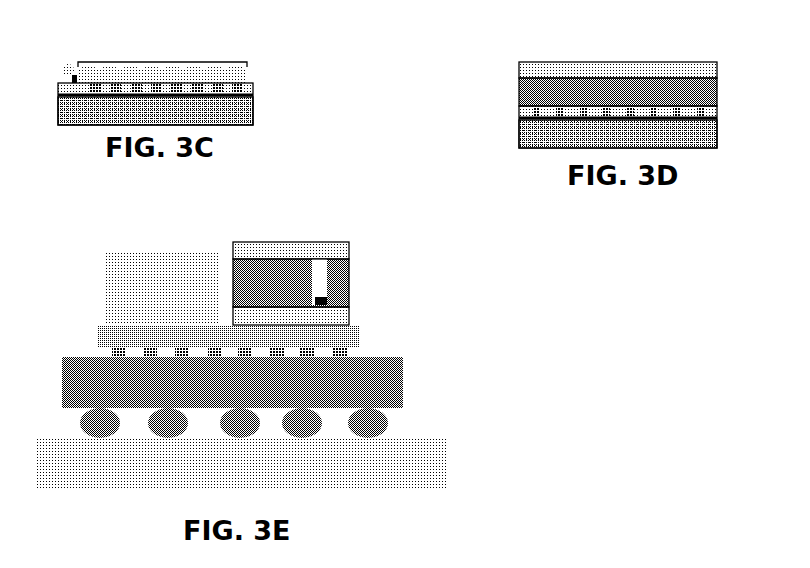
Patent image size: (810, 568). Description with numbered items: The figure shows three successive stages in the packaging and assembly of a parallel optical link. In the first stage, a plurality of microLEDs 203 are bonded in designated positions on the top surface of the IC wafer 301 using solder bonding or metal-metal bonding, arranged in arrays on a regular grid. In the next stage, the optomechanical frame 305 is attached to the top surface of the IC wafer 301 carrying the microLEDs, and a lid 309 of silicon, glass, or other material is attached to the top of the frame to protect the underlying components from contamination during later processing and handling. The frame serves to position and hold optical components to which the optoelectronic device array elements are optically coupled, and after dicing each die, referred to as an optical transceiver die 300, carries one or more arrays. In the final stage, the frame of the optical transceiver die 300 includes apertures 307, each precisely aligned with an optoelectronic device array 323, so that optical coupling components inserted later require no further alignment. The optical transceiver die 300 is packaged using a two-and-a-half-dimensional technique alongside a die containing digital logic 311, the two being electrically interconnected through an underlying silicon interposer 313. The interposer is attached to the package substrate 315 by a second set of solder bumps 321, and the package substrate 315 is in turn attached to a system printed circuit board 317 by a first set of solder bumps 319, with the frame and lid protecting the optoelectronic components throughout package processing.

In FIG. 3C, the microLEDs 203 is at (163, 55).
In FIG. 3D, the optical transceiver die 300 is at (452, 90).
In FIG. 3E, the optical transceiver die 300 is at (397, 298).
In FIG. 3C, the IC wafer 301 is at (253, 90).
In FIG. 3D, the IC wafer 301 is at (519, 113).
In FIG. 3E, the IC wafer 301 is at (291, 316).
In FIG. 3D, the optomechanical frame 305 is at (717, 92).
In FIG. 3E, the optomechanical frame 305 is at (291, 283).
In FIG. 3E, the apertures 307 is at (320, 280).
In FIG. 3D, the lid 309 is at (519, 68).
In FIG. 3E, the lid 309 is at (233, 250).
In FIG. 3E, the digital logic die 311 is at (163, 289).
In FIG. 3E, the silicon interposer 313 is at (229, 336).
In FIG. 3E, the package substrate 315 is at (232, 382).
In FIG. 3E, the system printed circuit board 317 is at (241, 463).
In FIG. 3E, the first set of solder bumps 319 is at (80, 427).
In FIG. 3E, the second set of solder bumps 321 is at (110, 352).
In FIG. 3E, the optoelectronic device array 323 is at (328, 299).